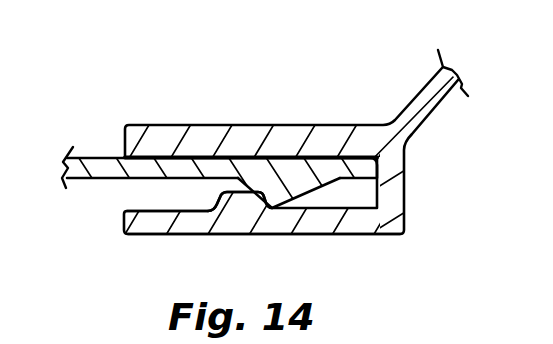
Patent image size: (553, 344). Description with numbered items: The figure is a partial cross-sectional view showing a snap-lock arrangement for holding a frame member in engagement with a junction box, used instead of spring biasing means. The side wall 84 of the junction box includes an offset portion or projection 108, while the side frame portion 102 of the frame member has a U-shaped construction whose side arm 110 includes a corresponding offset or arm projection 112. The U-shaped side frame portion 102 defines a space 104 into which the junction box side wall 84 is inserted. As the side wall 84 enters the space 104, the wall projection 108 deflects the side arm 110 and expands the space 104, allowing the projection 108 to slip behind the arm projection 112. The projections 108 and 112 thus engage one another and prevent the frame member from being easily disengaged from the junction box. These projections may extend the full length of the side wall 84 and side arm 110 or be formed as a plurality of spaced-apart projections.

The side wall 84 is at (99, 158).
The side frame portion 102 is at (403, 200).
The space 104 is at (175, 193).
The projection 108 is at (242, 232).
The side arm 110 is at (345, 233).
The arm projection 112 is at (236, 203).